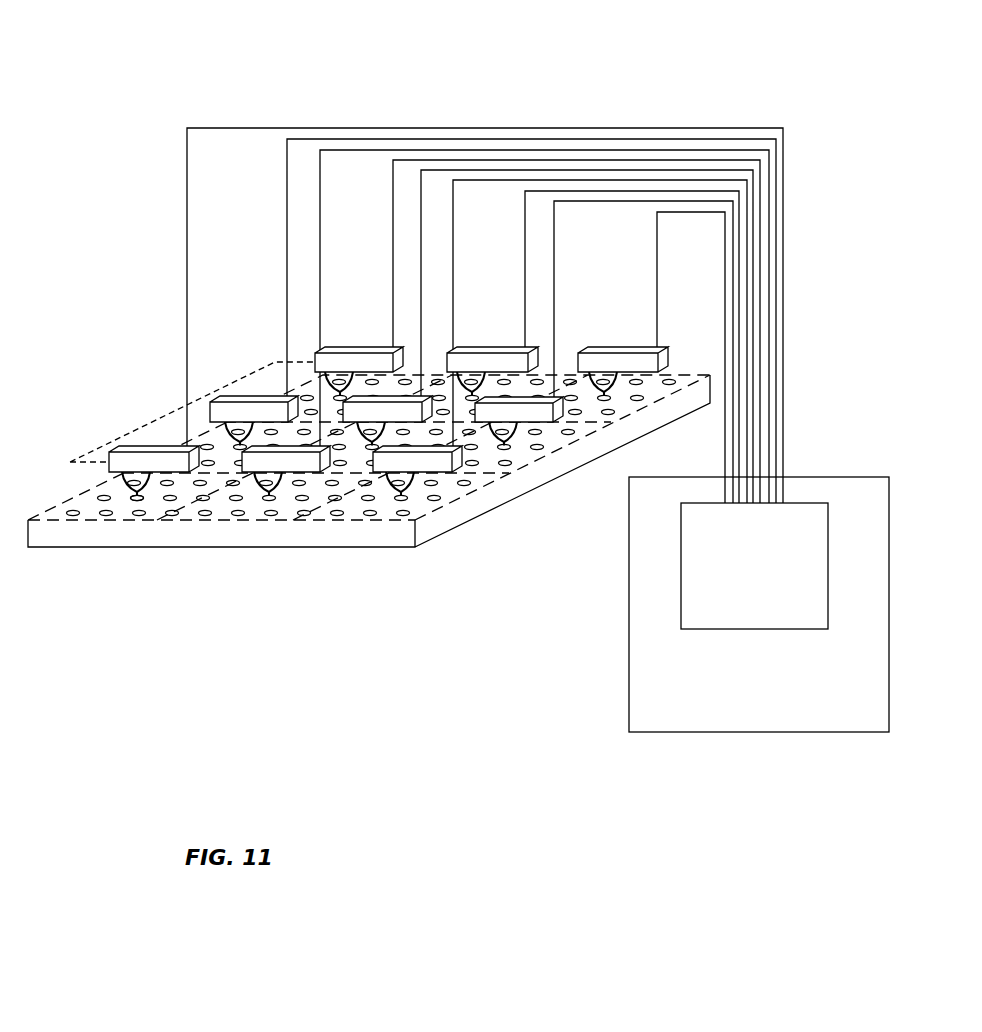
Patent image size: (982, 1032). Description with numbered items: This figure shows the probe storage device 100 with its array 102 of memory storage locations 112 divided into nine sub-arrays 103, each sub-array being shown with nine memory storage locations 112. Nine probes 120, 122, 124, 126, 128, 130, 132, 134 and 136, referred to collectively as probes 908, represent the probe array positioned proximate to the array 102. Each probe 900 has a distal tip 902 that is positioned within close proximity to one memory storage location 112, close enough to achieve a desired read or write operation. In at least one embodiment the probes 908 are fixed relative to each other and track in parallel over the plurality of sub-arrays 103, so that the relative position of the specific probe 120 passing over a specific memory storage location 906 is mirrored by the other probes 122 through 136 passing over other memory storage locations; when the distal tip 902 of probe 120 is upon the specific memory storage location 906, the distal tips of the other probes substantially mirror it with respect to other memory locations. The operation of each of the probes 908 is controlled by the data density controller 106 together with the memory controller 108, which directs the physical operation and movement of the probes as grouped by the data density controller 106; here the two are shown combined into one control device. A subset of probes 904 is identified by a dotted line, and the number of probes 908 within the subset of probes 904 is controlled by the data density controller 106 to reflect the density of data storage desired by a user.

The probe storage device 100 is at (790, 47).
The array of memory storage locations 102 is at (369, 500).
The sub-arrays 103 is at (482, 488).
The data density controller 106 is at (741, 613).
The memory controller 108 is at (746, 721).
The memory storage locations 112 is at (238, 516).
The probe 120 is at (137, 469).
The probe 122 is at (237, 419).
The probe 124 is at (342, 369).
The probe 126 is at (269, 469).
The probe 128 is at (370, 419).
The probe 130 is at (475, 369).
The probe 132 is at (400, 469).
The probe 134 is at (502, 419).
The probe 136 is at (606, 369).
The probe 900 is at (92, 461).
The distal tip 902 is at (120, 475).
The subset of probes 904 is at (199, 409).
The specific memory storage location 906 is at (134, 502).
The probes 908 is at (250, 383).